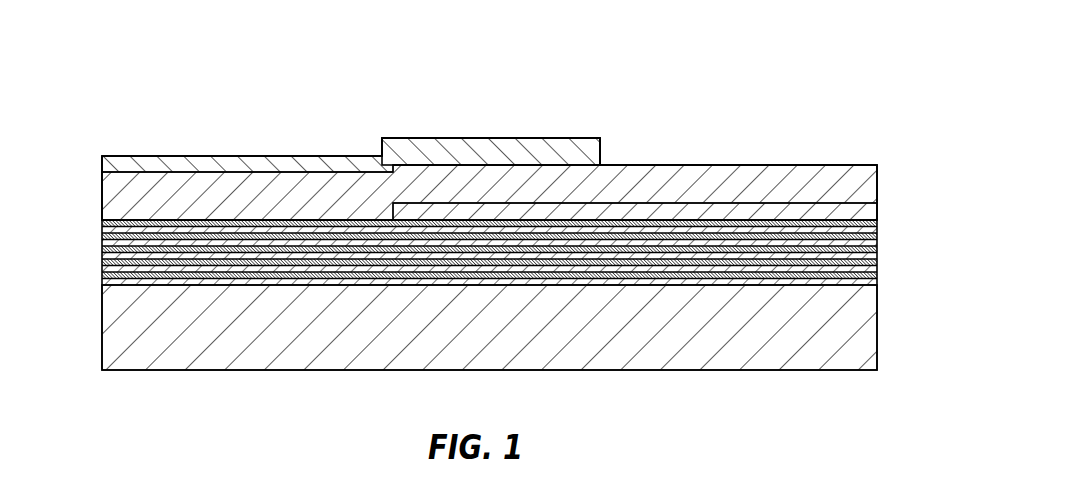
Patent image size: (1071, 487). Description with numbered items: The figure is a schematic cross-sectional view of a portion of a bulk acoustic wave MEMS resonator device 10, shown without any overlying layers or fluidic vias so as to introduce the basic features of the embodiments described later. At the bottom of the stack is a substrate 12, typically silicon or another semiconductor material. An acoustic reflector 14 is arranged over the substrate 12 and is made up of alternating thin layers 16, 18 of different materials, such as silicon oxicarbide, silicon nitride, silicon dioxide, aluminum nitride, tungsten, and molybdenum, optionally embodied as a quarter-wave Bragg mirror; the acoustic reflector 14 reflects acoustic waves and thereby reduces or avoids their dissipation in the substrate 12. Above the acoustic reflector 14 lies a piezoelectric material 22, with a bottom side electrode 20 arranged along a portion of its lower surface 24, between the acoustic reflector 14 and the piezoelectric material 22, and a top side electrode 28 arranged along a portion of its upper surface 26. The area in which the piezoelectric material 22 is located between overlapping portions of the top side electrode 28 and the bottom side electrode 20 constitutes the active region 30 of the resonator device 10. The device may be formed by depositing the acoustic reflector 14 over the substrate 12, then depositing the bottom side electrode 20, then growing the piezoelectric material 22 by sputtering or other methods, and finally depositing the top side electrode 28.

The bulk acoustic wave MEMS resonator device 10 is at (113, 94).
The substrate 12 is at (879, 334).
The acoustic reflector 14 is at (484, 267).
The thin layer 16 is at (102, 280).
The thin layer 18 is at (102, 271).
The bottom side electrode 20 is at (879, 213).
The piezoelectric material 22 is at (102, 203).
The lower surface 24 is at (833, 203).
The upper surface 26 is at (790, 165).
The top side electrode 28 is at (102, 165).
The active region 30 is at (600, 109).